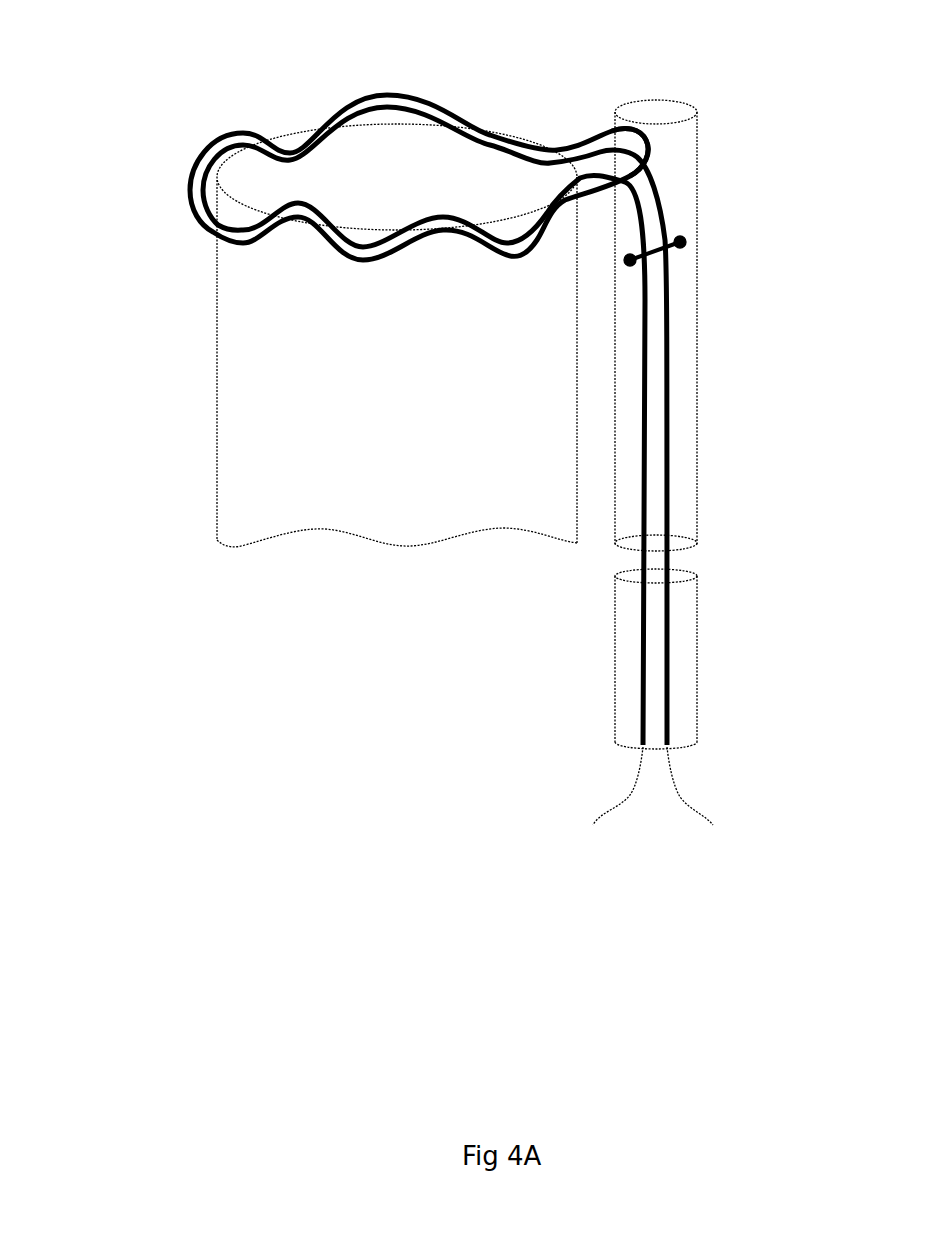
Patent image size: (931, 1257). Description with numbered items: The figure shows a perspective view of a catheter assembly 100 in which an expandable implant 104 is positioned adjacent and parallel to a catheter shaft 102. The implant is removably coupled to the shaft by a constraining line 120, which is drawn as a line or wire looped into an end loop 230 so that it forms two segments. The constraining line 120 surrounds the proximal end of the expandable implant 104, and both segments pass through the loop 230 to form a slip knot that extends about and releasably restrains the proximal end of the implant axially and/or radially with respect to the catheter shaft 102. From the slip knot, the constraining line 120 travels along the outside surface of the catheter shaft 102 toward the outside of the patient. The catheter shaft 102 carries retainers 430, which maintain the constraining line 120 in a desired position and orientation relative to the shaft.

The catheter assembly 100 is at (130, 260).
The catheter shaft 102 is at (697, 177).
The expandable implant 104 is at (242, 497).
The constraining line 120 is at (337, 107).
The loop 230 is at (607, 135).
The retainers 430 is at (680, 242).